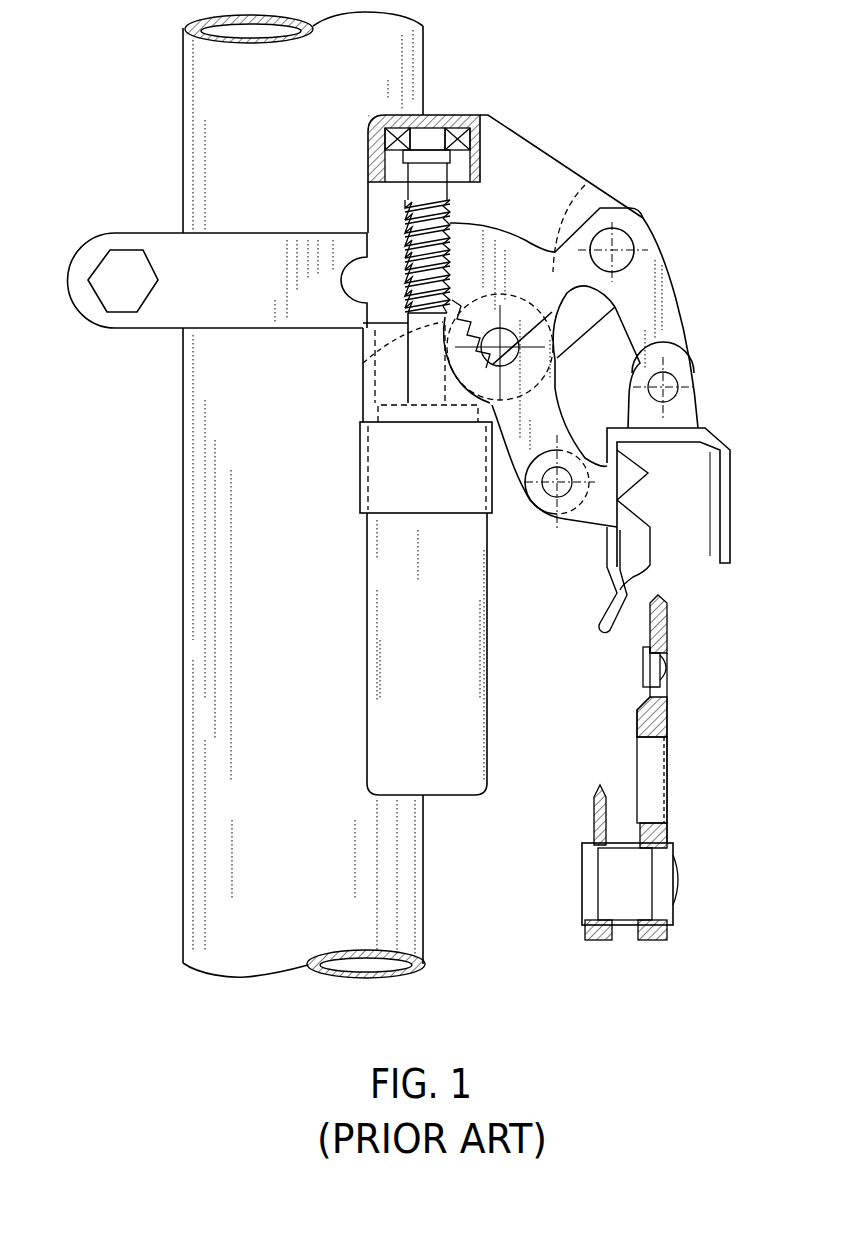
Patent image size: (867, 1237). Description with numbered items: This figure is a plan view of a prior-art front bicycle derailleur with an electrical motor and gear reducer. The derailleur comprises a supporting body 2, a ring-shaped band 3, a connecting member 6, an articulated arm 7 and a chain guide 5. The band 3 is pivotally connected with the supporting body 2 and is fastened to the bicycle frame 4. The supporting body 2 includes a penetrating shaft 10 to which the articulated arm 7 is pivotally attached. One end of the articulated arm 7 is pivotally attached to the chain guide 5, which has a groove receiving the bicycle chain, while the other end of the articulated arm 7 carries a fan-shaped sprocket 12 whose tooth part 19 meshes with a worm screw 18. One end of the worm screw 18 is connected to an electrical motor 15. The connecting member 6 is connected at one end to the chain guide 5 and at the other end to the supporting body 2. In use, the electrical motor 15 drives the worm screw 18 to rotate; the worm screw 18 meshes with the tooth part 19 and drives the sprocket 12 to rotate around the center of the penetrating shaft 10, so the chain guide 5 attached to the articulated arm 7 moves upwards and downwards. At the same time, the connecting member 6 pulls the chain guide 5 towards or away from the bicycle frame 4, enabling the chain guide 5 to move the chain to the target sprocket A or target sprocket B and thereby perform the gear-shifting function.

The supporting body 2 is at (525, 168).
The band 3 is at (210, 258).
The bicycle frame 4 is at (215, 478).
The chain guide 5 is at (742, 532).
The connecting member 6 is at (535, 413).
The articulated arm 7 is at (667, 303).
The penetrating shaft 10 is at (612, 250).
The fan-shaped sprocket 12 is at (585, 185).
The electrical motor 15 is at (390, 590).
The worm screw 18 is at (403, 240).
The tooth part 19 is at (445, 327).
The target sprocket A is at (668, 628).
The target sprocket B is at (600, 785).